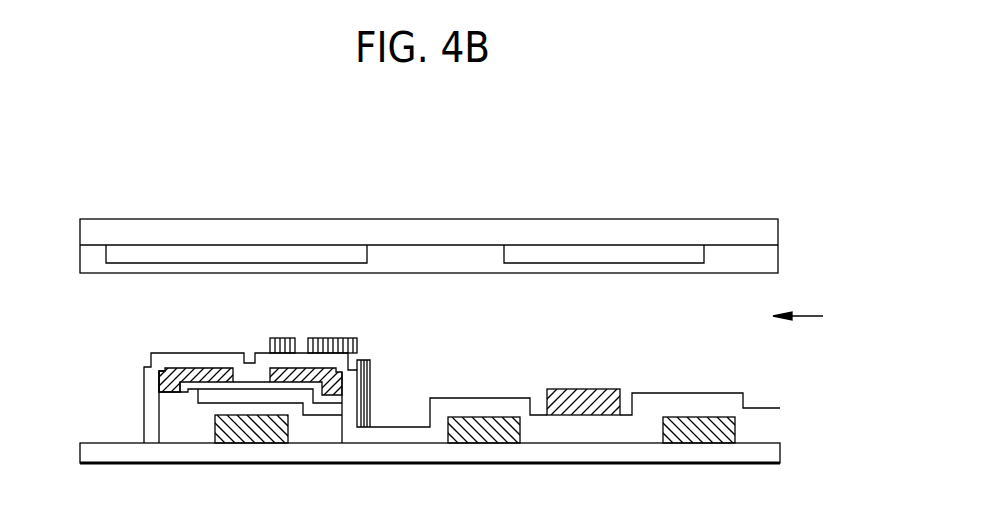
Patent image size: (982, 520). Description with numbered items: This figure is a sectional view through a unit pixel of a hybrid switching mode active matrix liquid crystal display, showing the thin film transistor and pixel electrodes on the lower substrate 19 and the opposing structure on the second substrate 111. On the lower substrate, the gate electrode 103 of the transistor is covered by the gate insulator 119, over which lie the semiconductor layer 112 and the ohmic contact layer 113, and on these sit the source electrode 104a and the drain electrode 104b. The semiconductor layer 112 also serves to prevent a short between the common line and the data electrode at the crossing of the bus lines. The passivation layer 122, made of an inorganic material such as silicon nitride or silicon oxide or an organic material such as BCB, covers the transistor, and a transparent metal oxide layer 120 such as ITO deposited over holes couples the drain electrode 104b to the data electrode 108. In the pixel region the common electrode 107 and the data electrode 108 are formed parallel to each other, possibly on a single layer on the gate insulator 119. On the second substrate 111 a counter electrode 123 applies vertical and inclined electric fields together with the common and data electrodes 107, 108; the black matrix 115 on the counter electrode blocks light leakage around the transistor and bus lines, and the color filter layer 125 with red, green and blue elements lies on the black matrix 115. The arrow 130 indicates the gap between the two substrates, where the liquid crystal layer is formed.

The substrate 19 is at (772, 421).
The gate electrode 103 is at (262, 436).
The source electrode 104a is at (188, 373).
The drain electrode 104b is at (307, 377).
The common electrode 107 is at (500, 437).
The data electrode 108 is at (592, 410).
The second substrate 111 is at (603, 225).
The semiconductor layer 112 is at (167, 408).
The ohmic contact layer 113 is at (215, 372).
The black matrix 115 is at (242, 255).
The gate insulator 119 is at (178, 437).
The transparent metal oxide layer 120 is at (356, 345).
The passivation layer 122 is at (421, 437).
The counter electrode 123 is at (675, 255).
The color filter layer 125 is at (480, 265).
The liquid crystal panel 130 is at (819, 318).